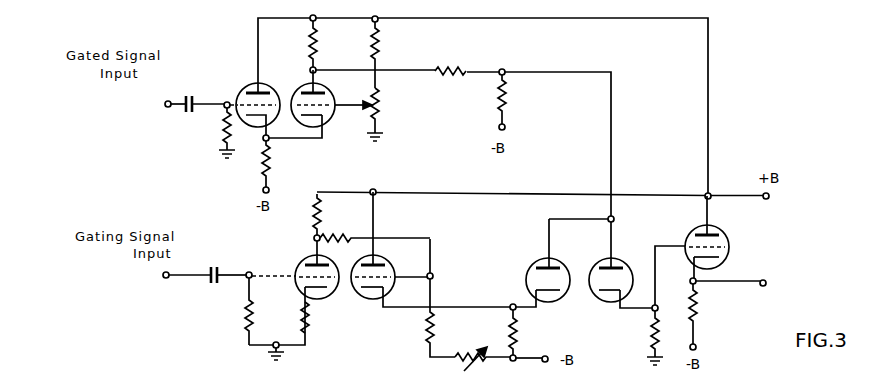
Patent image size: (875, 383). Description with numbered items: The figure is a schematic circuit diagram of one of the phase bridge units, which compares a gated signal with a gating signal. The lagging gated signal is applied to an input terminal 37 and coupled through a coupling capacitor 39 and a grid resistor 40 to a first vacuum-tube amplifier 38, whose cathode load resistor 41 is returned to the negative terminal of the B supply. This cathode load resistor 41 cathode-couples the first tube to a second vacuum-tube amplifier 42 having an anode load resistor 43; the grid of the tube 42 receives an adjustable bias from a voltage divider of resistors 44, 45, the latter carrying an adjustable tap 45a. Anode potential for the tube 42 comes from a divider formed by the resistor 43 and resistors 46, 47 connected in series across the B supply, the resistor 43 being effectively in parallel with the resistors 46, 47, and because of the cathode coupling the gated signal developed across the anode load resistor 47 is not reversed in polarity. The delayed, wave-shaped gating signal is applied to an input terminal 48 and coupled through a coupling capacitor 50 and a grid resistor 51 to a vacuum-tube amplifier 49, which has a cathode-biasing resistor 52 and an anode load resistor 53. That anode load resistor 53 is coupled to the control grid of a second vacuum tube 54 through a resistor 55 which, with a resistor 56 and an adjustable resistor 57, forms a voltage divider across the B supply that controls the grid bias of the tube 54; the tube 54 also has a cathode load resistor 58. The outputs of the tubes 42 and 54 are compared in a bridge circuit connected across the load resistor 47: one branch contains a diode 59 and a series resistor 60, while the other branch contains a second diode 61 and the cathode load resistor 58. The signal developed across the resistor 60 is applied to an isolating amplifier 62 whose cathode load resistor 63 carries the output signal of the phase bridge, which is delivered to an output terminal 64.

The input terminal 37 is at (165, 104).
The first vacuum-tube amplifier 38 is at (246, 87).
The coupling capacitor 39 is at (190, 95).
The grid resistor 40 is at (224, 130).
The cathode load resistor 41 is at (272, 163).
The second vacuum-tube amplifier 42 is at (329, 121).
The anode load resistor 43 is at (318, 48).
The resistor 44 is at (380, 48).
The resistor 45 is at (380, 120).
The adjustable tap 45a is at (366, 101).
The resistor 46 is at (458, 78).
The resistor 47 is at (506, 110).
The input terminal 48 is at (163, 274).
The vacuum-tube amplifier 49 is at (303, 260).
The coupling capacitor 50 is at (214, 286).
The grid resistor 51 is at (246, 302).
The cathode-biasing resistor 52 is at (309, 325).
The anode load resistor 53 is at (320, 222).
The second vacuum tube 54 is at (392, 270).
The resistor 55 is at (340, 238).
The resistor 56 is at (426, 333).
The adjustable resistor 57 is at (476, 345).
The cathode load resistor 58 is at (517, 330).
The diode 59 is at (620, 274).
The series resistor 60 is at (651, 340).
The diode 61 is at (535, 259).
The isolating amplifier 62 is at (727, 244).
The cathode load resistor 63 is at (697, 300).
The output terminal 64 is at (767, 283).